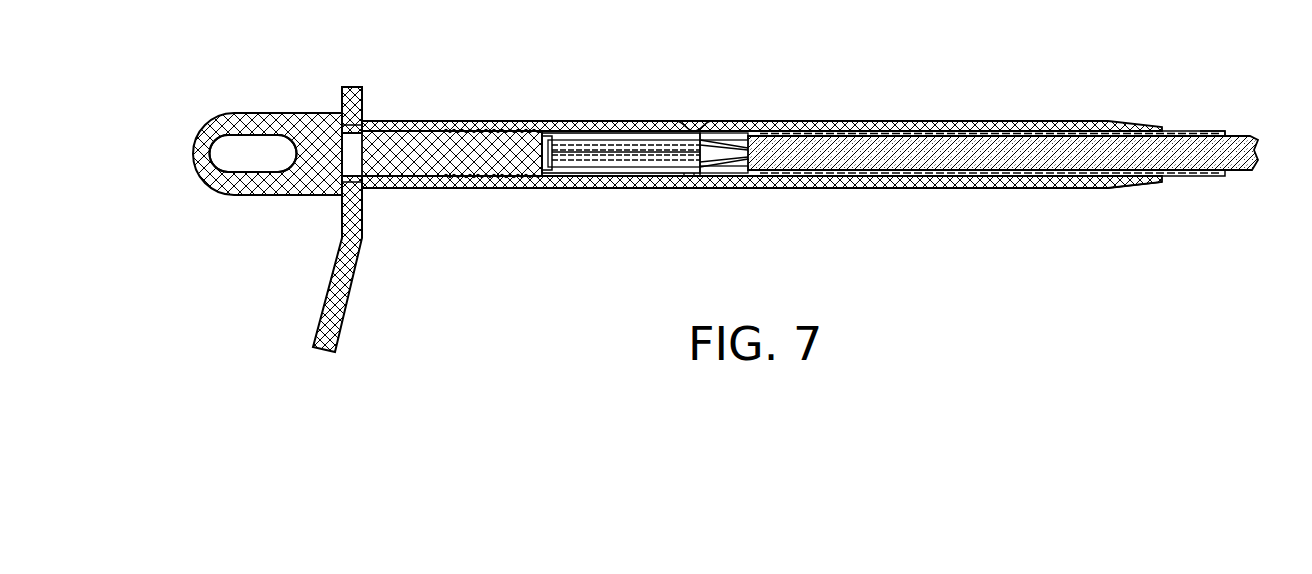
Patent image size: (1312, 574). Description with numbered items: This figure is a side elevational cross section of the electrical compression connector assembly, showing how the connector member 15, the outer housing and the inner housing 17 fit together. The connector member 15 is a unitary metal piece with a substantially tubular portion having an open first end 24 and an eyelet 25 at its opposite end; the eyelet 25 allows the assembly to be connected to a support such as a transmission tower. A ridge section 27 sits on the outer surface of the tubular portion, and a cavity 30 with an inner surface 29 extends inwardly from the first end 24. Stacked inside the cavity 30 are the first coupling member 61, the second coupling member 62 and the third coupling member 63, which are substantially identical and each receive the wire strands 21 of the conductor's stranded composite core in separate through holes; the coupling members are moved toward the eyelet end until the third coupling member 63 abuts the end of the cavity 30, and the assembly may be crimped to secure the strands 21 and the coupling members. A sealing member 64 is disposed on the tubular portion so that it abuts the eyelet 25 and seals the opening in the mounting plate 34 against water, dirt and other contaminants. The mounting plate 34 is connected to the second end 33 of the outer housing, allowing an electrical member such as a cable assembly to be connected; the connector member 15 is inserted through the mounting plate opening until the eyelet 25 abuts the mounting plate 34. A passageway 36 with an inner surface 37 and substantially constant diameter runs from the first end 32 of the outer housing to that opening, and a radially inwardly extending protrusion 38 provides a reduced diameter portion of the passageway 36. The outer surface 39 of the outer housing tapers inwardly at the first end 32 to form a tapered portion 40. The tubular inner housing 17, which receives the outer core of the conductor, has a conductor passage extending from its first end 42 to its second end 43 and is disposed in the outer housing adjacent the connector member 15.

The connector member 15 is at (252, 197).
The eyelet 25 is at (248, 112).
The sealing member 64 is at (350, 87).
The mounting plate 34 is at (320, 326).
The second end 33 is at (368, 121).
The inner surface 37 is at (425, 121).
The ridge section 27 is at (470, 188).
The cavity 30 is at (540, 131).
The third coupling member 63 is at (548, 188).
The inner surface 29 is at (546, 131).
The second coupling member 62 is at (606, 133).
The first coupling member 61 is at (640, 133).
The first end 24 is at (657, 133).
The protrusion 38 is at (690, 124).
The wire strand 21 is at (710, 130).
The passageway 36 is at (690, 188).
The second end 43 is at (705, 188).
The outer surface 39 is at (915, 121).
The first end 32 is at (1158, 128).
The inner housing 17 is at (1192, 131).
The first end 42 is at (1226, 130).
The tapered portion 40 is at (1158, 188).